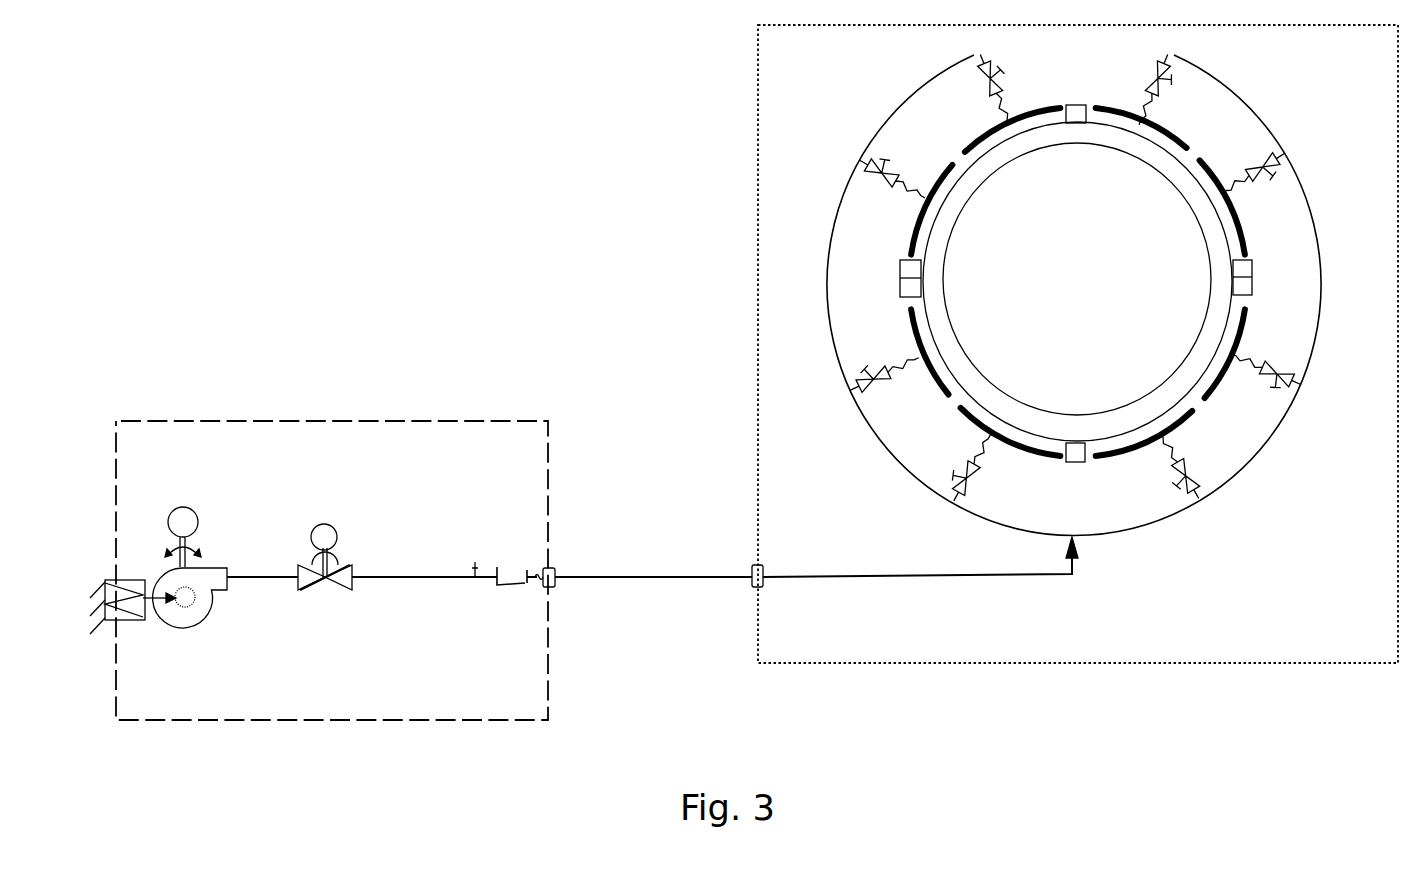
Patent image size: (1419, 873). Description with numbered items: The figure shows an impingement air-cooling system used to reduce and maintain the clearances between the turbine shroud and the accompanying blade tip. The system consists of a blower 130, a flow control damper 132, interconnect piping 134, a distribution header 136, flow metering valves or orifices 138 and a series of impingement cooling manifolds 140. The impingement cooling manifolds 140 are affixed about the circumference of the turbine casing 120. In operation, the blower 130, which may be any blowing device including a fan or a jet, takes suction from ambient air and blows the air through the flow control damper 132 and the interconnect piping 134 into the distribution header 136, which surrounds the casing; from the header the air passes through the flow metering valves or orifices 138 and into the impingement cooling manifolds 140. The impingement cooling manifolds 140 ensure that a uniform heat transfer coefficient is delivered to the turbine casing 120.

The turbine casing 120 is at (1010, 165).
The blower 130 is at (173, 633).
The flow control damper 132 is at (323, 587).
The interconnect piping 134 is at (637, 578).
The distribution header 136 is at (1237, 475).
The flow metering valves or orifices 138 is at (1287, 353).
The impingement cooling manifolds 140 is at (1037, 102).